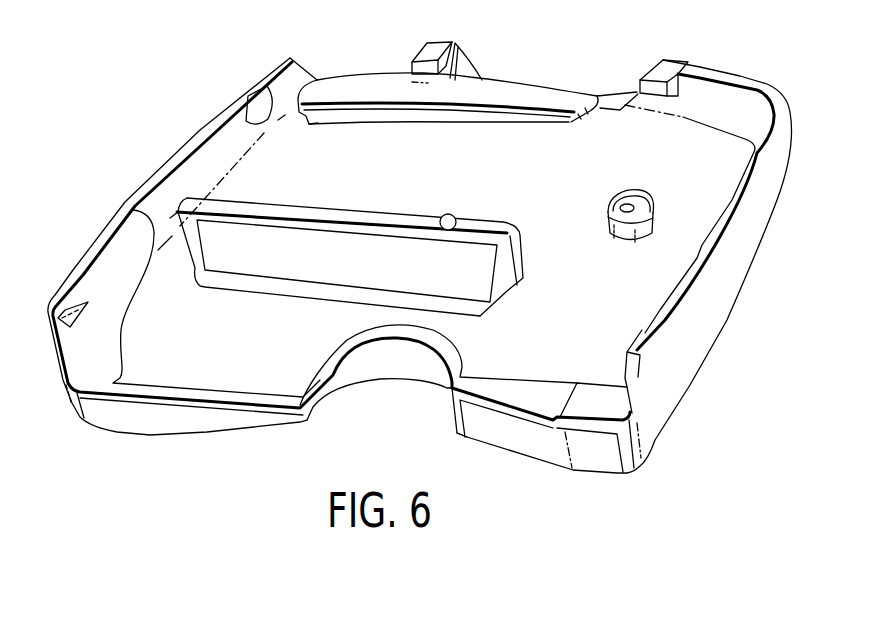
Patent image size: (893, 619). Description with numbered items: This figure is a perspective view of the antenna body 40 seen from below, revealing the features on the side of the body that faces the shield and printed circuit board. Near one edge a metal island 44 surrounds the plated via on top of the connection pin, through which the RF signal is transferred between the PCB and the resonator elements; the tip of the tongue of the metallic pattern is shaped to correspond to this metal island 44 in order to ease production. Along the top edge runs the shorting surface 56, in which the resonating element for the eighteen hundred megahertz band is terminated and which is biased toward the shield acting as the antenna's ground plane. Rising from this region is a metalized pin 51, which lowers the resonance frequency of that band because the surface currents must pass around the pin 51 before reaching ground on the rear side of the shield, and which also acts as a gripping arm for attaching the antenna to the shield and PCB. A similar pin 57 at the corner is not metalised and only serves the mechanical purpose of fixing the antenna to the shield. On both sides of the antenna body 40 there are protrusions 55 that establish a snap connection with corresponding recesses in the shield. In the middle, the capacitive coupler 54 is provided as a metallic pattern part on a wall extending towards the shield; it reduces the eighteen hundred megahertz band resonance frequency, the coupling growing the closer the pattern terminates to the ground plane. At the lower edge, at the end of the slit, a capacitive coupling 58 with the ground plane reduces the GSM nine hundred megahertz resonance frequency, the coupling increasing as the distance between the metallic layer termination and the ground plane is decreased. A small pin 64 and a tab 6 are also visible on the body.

The antenna body 40 is at (116, 196).
The metal island 44 is at (647, 193).
The metalized pin 51 is at (456, 44).
The capacitive coupler 54 is at (304, 251).
The protrusions 55 is at (74, 298).
The shorting surface 56 is at (380, 90).
The pin 57 is at (660, 60).
The capacitive coupling 58 is at (502, 430).
The retaining tab 6 is at (428, 43).
The pin 64 is at (453, 213).